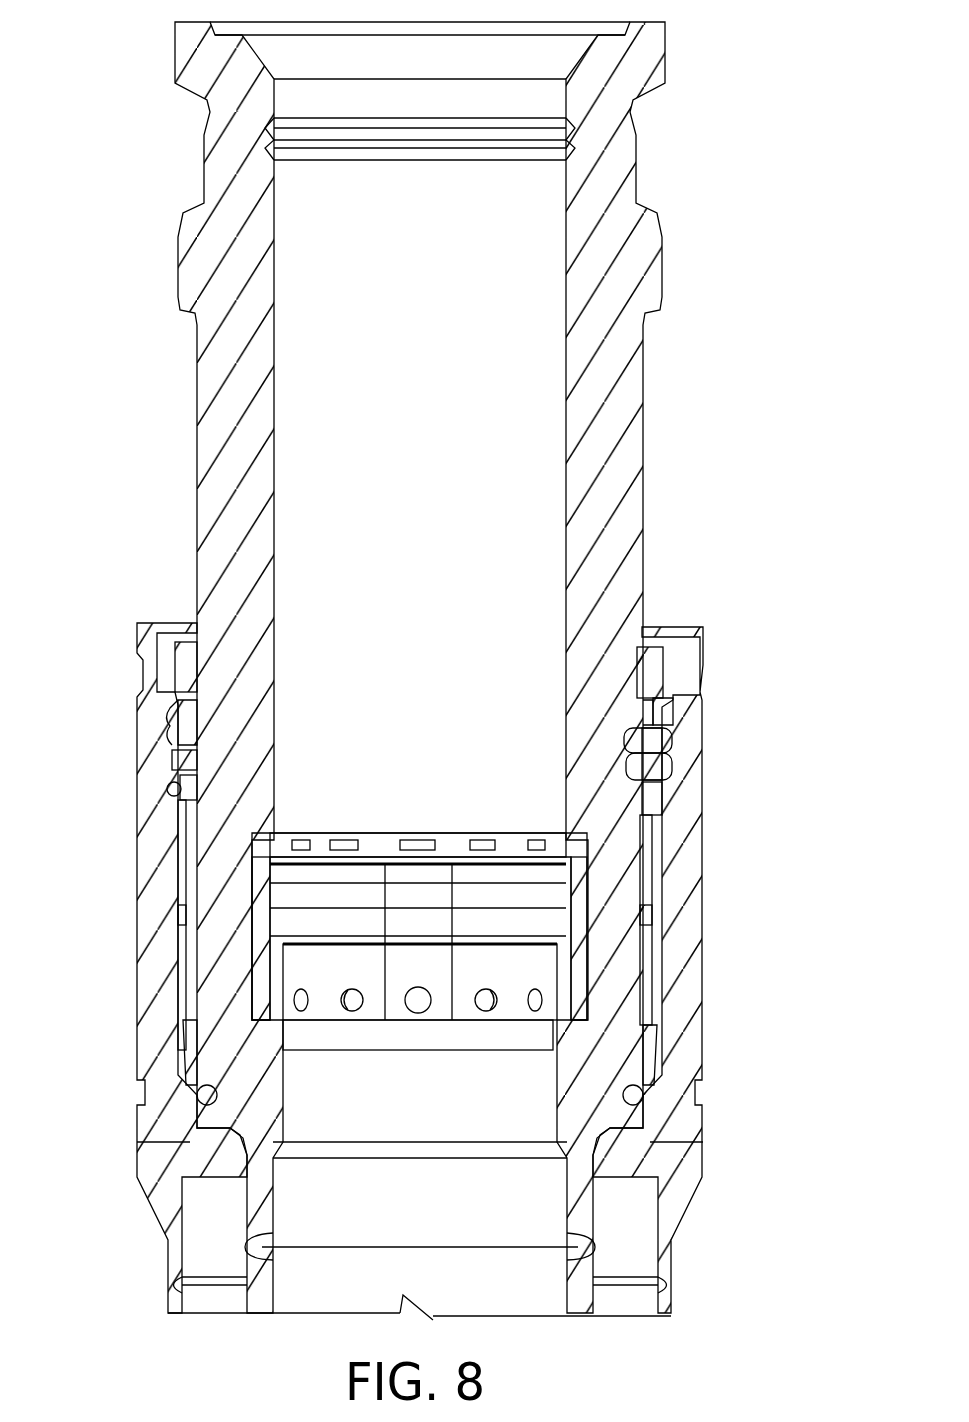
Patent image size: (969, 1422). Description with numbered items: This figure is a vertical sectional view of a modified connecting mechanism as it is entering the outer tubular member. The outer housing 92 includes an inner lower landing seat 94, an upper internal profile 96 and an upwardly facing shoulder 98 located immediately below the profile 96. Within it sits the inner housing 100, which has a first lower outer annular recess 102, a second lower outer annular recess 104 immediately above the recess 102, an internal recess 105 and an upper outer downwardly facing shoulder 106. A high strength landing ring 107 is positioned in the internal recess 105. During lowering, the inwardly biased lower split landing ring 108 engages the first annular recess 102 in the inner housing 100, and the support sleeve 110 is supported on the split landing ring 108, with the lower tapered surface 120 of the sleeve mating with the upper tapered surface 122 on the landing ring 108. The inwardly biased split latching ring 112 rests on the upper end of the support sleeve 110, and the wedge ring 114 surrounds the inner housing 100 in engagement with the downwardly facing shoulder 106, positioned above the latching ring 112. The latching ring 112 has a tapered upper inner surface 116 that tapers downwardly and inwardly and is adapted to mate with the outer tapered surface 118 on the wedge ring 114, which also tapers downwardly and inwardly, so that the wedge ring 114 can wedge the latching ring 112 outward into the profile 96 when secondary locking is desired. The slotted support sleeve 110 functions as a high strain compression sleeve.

The outer housing 92 is at (137, 920).
The inner lower landing seat 94 is at (200, 1103).
The upper internal profile 96 is at (167, 728).
The upwardly facing shoulder 98 is at (173, 787).
The inner housing 100 is at (640, 497).
The first lower outer annular recess 102 is at (640, 1097).
The second lower outer annular recess 104 is at (633, 1040).
The internal recess 105 is at (255, 838).
The upper outer downwardly facing shoulder 106 is at (640, 650).
The high strength landing ring 107 is at (280, 970).
The lower split landing ring 108 is at (187, 1067).
The support sleeve 110 is at (185, 977).
The split latching ring 112 is at (172, 765).
The wedge ring 114 is at (175, 660).
The tapered upper inner surface 116 is at (665, 780).
The outer tapered surface 118 is at (665, 708).
The lower tapered surface 120 is at (650, 1077).
The upper tapered surface 122 is at (653, 1033).